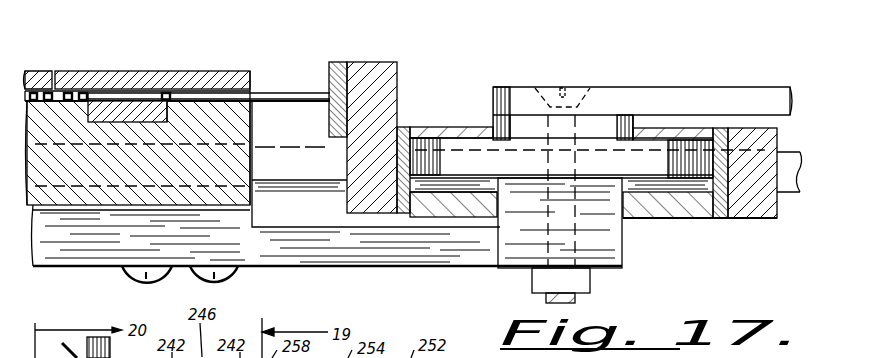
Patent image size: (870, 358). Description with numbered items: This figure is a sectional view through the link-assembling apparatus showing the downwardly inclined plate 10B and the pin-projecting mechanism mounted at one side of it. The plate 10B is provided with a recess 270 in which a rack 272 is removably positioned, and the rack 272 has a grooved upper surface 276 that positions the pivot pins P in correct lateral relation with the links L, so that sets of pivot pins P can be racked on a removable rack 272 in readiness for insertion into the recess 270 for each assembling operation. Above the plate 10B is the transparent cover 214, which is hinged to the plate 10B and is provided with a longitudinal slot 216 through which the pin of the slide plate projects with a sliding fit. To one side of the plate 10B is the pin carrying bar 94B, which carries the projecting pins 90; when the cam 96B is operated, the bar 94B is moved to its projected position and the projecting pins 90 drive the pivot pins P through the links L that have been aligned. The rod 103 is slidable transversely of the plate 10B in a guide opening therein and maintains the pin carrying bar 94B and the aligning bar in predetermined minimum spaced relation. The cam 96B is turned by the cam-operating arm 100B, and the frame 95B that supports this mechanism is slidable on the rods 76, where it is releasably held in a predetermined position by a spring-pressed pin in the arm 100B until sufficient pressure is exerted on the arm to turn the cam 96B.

The transparent cover 214 is at (64, 72).
The longitudinal slot 216 is at (58, 70).
The links L is at (67, 92).
The recess 270 is at (82, 98).
The rack 272 is at (115, 105).
The grooved upper surface 276 is at (134, 100).
The pivot pins P is at (148, 97).
The plate 10B is at (255, 128).
The projecting pins 90 is at (278, 97).
The rod 103 is at (268, 160).
The pin carrying bar 94B is at (398, 65).
The cam 96B is at (446, 150).
The cam-operating arm 100B is at (688, 87).
The frame 95B is at (744, 218).
The rods 76 is at (465, 186).